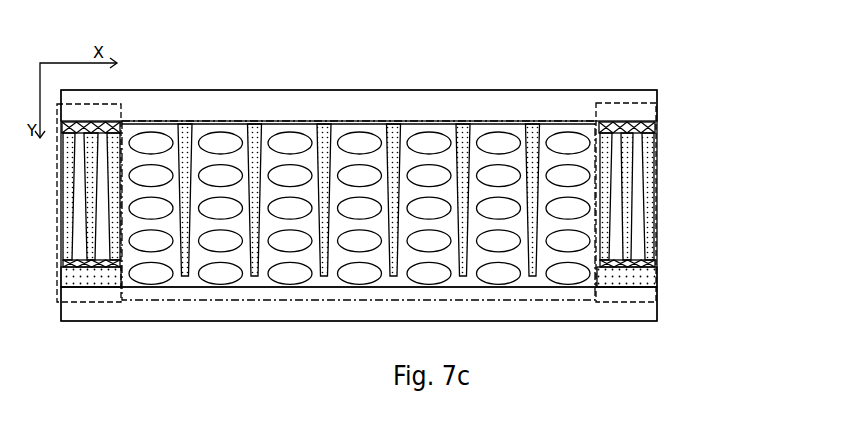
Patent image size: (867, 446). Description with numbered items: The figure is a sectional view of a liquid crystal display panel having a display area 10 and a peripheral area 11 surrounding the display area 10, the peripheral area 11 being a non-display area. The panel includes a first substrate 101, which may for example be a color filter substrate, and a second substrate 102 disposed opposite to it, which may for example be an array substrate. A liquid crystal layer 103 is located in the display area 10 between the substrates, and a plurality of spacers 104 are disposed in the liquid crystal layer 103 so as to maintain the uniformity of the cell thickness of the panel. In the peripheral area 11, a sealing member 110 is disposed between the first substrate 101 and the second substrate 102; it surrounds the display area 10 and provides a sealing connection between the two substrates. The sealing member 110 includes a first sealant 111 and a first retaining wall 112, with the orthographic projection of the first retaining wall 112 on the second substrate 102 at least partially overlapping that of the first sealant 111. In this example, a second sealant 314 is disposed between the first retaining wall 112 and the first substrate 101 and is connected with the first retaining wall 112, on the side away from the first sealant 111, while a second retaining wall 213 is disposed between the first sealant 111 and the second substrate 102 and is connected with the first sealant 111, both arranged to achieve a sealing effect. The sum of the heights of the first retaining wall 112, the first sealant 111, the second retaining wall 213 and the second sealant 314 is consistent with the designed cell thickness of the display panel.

The display area 10 is at (443, 121).
The peripheral area 11 is at (77, 104).
The first substrate 101 is at (634, 118).
The second substrate 102 is at (618, 315).
The liquid crystal layer 103 is at (567, 183).
The spacers 104 is at (525, 164).
The sealing member 110 is at (423, 200).
The first sealant 111 is at (630, 258).
The first retaining wall 112 is at (648, 230).
The second retaining wall 213 is at (613, 280).
The second sealant 314 is at (657, 125).